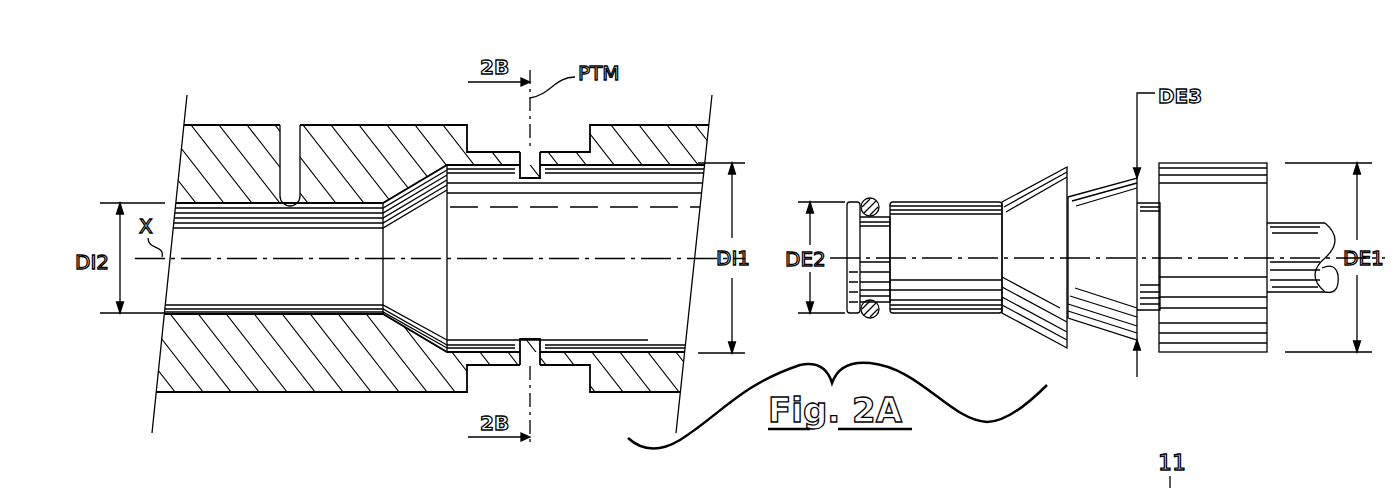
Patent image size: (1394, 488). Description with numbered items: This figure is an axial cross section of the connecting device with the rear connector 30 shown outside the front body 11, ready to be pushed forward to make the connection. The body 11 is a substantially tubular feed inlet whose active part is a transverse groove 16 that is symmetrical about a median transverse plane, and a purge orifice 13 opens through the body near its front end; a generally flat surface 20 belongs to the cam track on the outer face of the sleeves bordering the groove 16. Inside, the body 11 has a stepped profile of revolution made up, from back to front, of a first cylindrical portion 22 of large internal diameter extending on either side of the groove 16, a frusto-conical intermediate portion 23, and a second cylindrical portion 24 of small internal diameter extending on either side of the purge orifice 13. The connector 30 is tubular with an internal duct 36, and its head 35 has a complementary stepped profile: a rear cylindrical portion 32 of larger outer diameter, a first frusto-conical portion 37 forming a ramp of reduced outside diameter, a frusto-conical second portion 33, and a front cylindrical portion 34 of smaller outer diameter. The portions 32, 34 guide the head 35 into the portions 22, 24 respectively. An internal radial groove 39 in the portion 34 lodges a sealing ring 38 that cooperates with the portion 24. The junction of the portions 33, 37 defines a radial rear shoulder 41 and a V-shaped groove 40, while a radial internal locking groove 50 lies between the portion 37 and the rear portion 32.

The front body 11 is at (183, 347).
The purge orifice 13 is at (290, 135).
The transverse groove 16 is at (540, 148).
The flat surface 20 is at (562, 370).
The first cylindrical portion 22 is at (620, 352).
The frusto-conical intermediate portion 23 is at (398, 322).
The second cylindrical portion 24 is at (200, 207).
The rear connector 30 is at (1055, 247).
The first cylindrical portion 32 is at (1185, 162).
The frusto-conical second portion 33 is at (1016, 176).
The second cylindrical portion 34 is at (940, 200).
The head 35 is at (978, 325).
The internal duct 36 is at (836, 229).
The first frusto-conical portion 37 is at (1112, 338).
The sealing ring 38 is at (870, 198).
The internal radial groove 39 is at (877, 297).
The groove 40 is at (1083, 183).
The radial rear shoulder 41 is at (1076, 349).
The radial internal locking groove 50 is at (1144, 315).